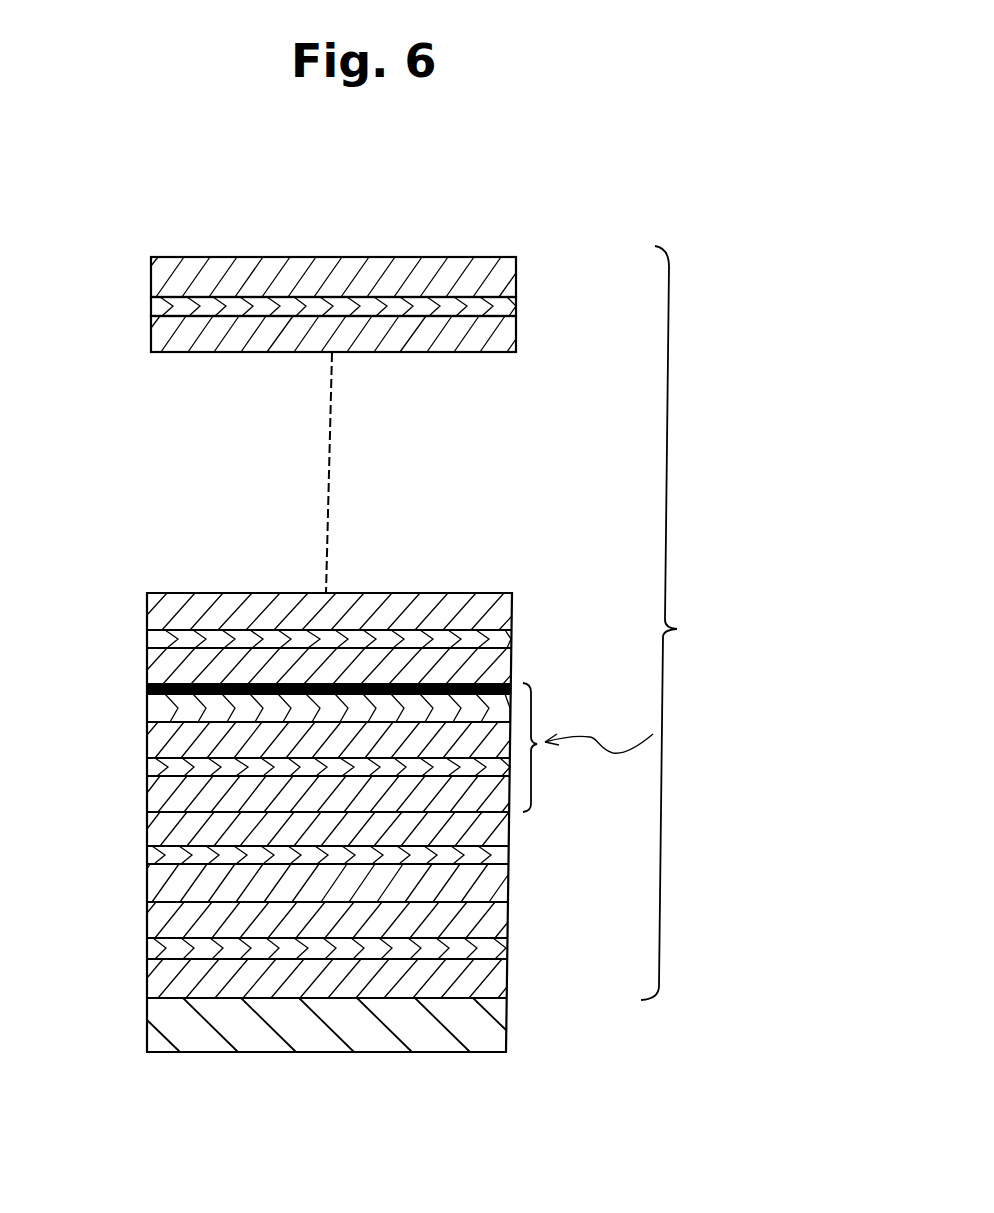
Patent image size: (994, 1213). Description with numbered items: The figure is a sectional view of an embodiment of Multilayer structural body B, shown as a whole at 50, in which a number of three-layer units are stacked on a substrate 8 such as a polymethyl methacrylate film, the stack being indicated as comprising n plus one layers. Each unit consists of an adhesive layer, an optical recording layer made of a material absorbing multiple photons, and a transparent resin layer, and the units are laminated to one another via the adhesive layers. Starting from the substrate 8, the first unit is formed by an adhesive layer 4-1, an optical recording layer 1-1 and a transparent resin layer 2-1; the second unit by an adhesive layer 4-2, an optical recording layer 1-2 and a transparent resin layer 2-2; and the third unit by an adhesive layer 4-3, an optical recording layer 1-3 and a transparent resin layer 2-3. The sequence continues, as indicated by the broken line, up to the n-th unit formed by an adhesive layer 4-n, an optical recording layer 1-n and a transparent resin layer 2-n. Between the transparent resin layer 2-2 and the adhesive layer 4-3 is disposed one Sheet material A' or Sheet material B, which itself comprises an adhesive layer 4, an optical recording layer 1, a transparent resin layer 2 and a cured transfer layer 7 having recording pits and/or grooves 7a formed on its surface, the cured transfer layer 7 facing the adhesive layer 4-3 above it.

The laminate of n+1 layers 50 is at (488, 243).
The transparent resin layer 2-n is at (508, 279).
The optical recording layer 1-n is at (508, 306).
The adhesive layer 4-n is at (507, 335).
The transparent resin layer 2-3 is at (505, 609).
The optical recording layer 1-3 is at (505, 640).
The adhesive layer 4-3 is at (505, 673).
The recording pits and/or grooves 7a is at (145, 686).
The cured transfer layer 7 is at (278, 684).
The transparent resin layer 2 is at (150, 738).
The optical recording layer 1 is at (150, 766).
The adhesive layer 4 is at (152, 796).
The transparent resin layer 2-2 is at (505, 828).
The optical recording layer 1-2 is at (505, 857).
The adhesive layer 4-2 is at (505, 888).
The transparent resin layer 2-1 is at (505, 922).
The optical recording layer 1-1 is at (505, 956).
The adhesive layer 4-1 is at (505, 988).
The substrate 8 is at (490, 1029).